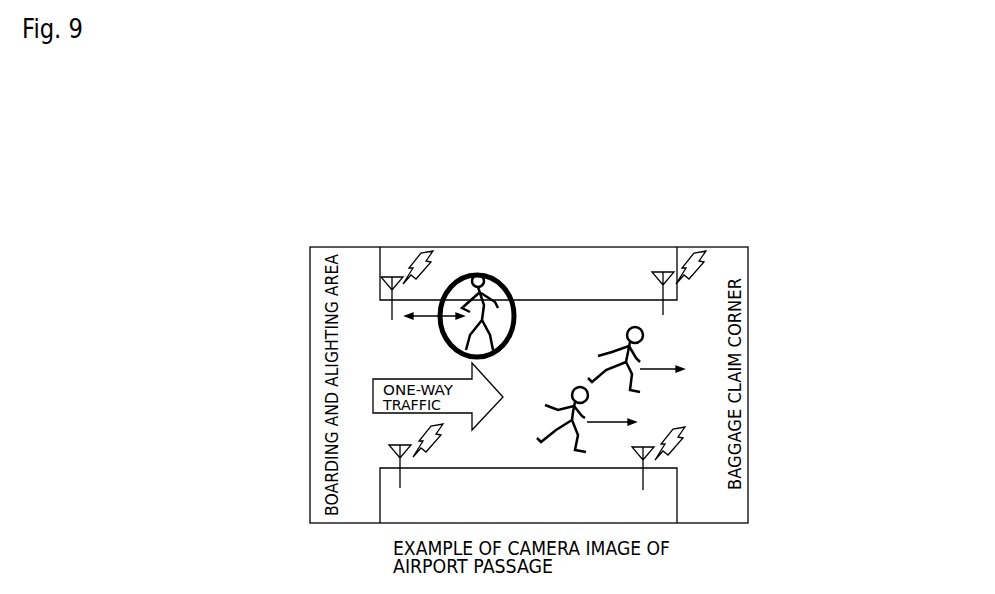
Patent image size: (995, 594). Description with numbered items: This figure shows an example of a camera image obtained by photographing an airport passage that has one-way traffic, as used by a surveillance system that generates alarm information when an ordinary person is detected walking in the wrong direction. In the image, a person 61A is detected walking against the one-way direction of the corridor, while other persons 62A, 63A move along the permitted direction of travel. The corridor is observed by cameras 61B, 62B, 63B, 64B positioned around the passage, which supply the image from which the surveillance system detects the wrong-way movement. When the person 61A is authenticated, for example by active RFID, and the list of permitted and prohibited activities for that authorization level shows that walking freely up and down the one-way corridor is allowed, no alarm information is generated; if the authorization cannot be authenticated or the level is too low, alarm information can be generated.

The person 61A is at (472, 276).
The person (passenger running in passage) 62A is at (583, 383).
The person (passenger running in passage) 63A is at (628, 328).
The camera 61B is at (393, 292).
The camera 62B is at (401, 459).
The camera 63B is at (644, 460).
The camera 64B is at (664, 288).